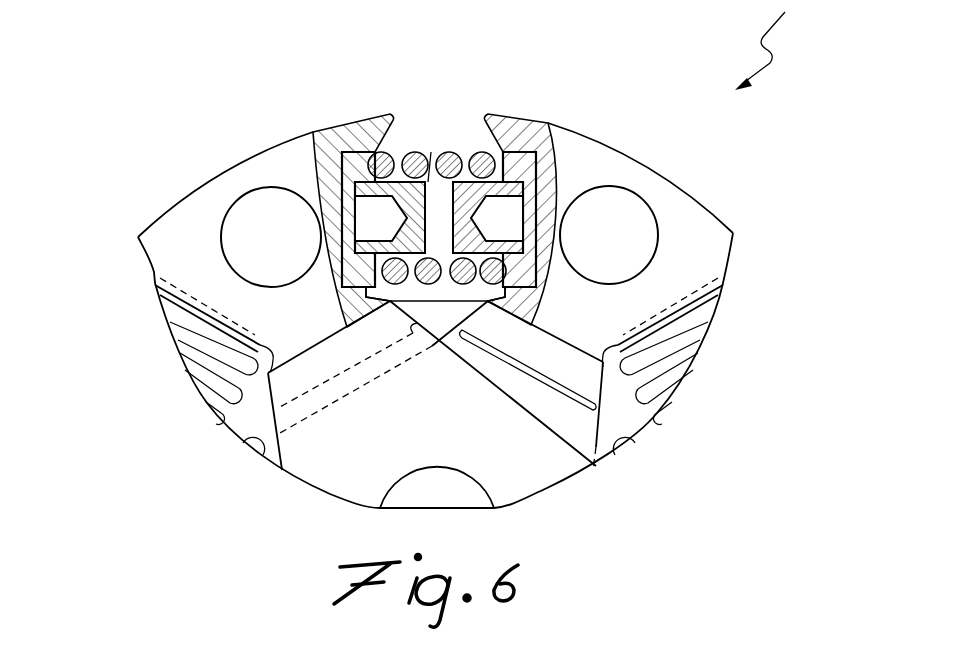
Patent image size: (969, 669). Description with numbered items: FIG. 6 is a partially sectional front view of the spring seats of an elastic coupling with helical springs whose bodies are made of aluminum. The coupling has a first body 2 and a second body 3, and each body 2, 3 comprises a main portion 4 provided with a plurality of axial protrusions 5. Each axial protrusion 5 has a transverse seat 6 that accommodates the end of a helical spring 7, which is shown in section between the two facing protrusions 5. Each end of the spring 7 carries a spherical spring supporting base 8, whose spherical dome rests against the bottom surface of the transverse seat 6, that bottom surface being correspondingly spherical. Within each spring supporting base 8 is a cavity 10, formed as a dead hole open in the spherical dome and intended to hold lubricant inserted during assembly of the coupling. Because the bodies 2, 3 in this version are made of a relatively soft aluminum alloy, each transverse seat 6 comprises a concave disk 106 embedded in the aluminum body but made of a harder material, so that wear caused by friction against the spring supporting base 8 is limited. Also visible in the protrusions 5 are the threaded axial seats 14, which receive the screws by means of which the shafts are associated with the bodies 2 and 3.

The first body 2 is at (166, 192).
The second body 3 is at (728, 211).
The main portion 4 is at (550, 453).
The axial protrusion 5 is at (277, 155).
The transverse seat 6 is at (393, 140).
The helical spring 7 is at (445, 150).
The spherical spring supporting base 8 is at (354, 158).
The cavity 10 is at (370, 217).
The threaded axial seat 14 is at (250, 212).
The concave disk 106 is at (330, 276).